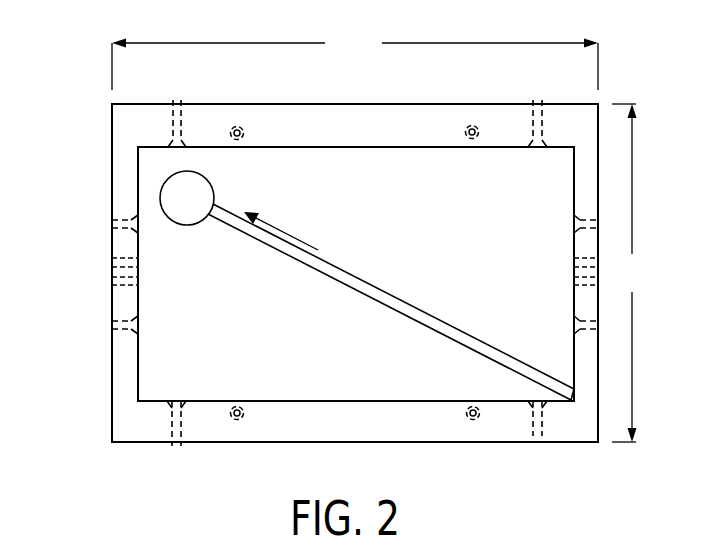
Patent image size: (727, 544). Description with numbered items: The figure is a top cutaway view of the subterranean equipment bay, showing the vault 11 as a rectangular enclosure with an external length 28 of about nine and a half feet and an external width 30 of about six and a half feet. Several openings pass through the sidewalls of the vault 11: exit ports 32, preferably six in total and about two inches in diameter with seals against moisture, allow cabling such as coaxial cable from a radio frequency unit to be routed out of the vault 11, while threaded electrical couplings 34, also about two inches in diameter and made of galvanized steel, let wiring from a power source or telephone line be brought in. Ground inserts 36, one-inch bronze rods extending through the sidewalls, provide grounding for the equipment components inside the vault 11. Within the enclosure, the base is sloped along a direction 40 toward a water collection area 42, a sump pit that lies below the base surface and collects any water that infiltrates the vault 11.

The vault 11 is at (112, 417).
The external length 28 is at (355, 58).
The external width 30 is at (630, 273).
The exit ports 32 is at (537, 104).
The threaded electrical couplings 34 is at (177, 104).
The ground inserts 36 is at (112, 279).
The direction 40 is at (288, 232).
The water collection area 42 is at (213, 183).